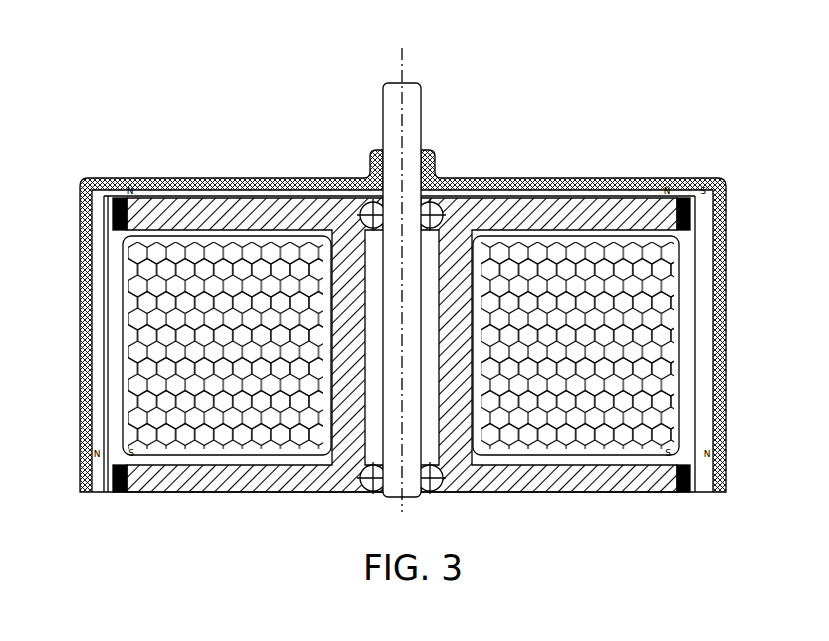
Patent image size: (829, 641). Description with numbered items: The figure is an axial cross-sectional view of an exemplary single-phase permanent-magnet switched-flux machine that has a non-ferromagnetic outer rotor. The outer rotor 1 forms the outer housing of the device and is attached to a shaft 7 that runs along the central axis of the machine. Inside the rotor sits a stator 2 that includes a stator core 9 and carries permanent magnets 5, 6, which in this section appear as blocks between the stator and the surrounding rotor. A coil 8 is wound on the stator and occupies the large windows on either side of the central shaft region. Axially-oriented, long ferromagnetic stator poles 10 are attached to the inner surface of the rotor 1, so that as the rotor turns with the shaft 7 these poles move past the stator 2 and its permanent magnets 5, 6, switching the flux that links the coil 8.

The non-ferromagnetic outer rotor 1 is at (253, 180).
The stator 2 is at (630, 213).
The permanent magnet 5 is at (105, 183).
The permanent magnet 6 is at (128, 492).
The shaft 7 is at (412, 123).
The coil 8 is at (148, 370).
The stator core 9 is at (466, 295).
The ferromagnetic stator pole 10 is at (97, 432).